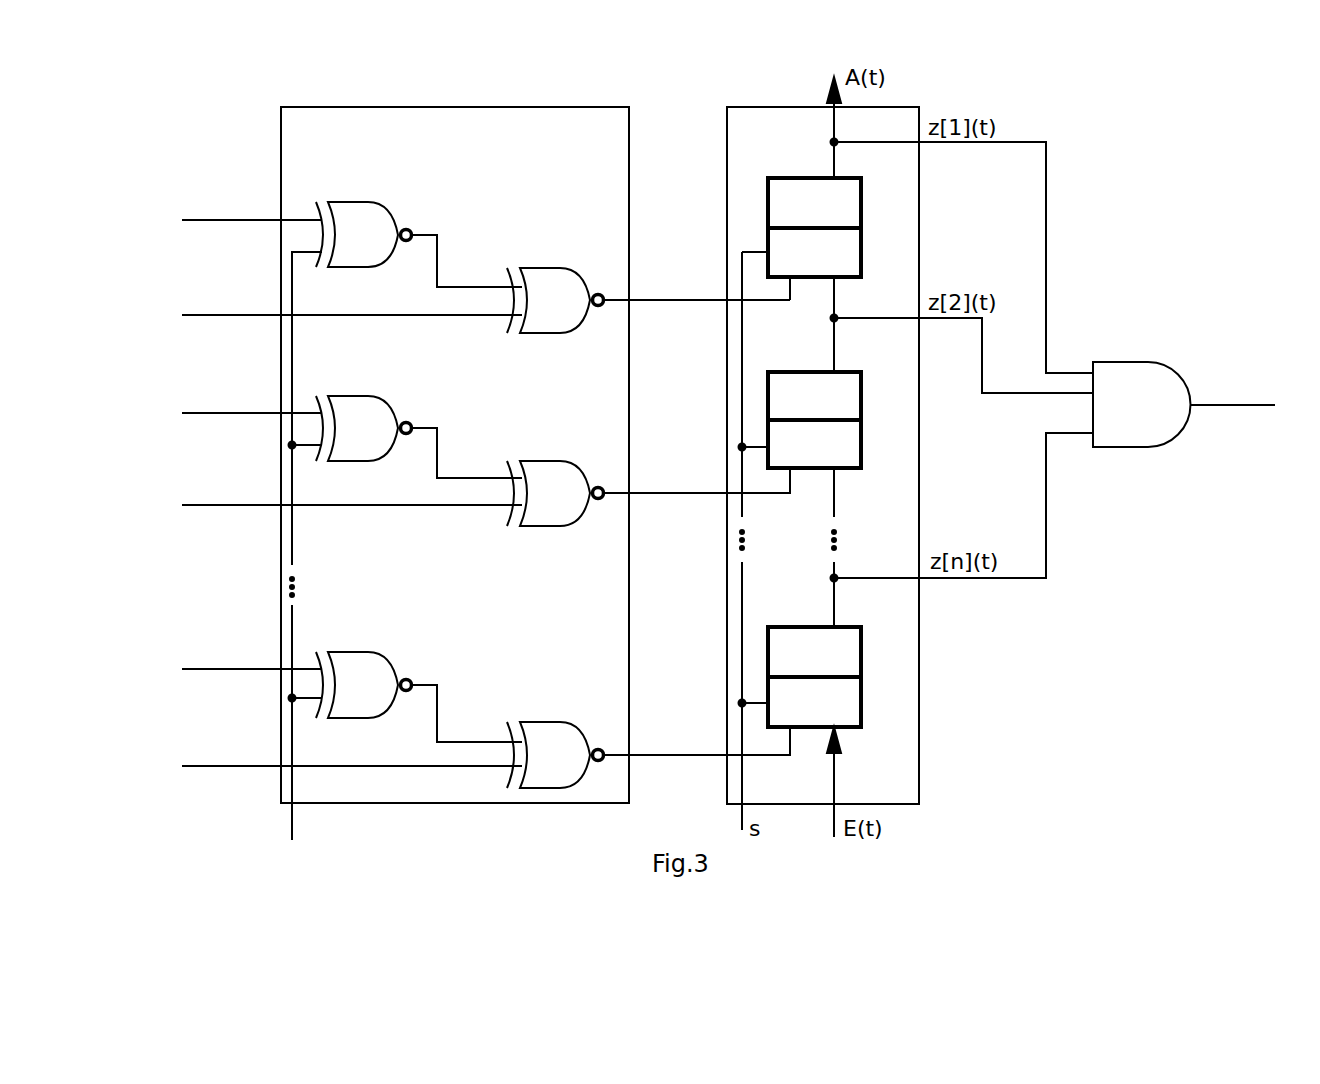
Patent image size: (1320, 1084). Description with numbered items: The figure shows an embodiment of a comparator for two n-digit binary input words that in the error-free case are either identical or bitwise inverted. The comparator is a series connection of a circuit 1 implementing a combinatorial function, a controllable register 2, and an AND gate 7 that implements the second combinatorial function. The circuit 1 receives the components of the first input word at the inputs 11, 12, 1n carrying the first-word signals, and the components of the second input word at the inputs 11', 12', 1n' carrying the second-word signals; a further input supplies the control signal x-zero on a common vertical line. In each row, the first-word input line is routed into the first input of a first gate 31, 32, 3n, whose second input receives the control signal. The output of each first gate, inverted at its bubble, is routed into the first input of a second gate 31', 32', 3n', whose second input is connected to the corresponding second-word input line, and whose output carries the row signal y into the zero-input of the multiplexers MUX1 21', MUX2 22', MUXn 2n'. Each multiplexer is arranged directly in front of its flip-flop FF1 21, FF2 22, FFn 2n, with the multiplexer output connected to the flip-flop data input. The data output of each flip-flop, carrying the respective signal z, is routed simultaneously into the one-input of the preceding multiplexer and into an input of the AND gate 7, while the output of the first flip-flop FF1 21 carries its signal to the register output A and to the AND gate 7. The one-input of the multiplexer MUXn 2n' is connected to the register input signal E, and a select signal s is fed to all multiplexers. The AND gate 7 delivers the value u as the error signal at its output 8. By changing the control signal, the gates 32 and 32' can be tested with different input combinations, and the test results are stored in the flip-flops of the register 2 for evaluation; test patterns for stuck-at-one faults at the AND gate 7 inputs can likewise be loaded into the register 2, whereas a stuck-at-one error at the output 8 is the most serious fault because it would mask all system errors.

The circuit for implementing combinatorial function f1 1 is at (603, 122).
The controllable register 2 is at (763, 122).
The input 11 is at (241, 185).
The input 11' is at (341, 281).
The input 12 is at (242, 382).
The input 12' is at (342, 473).
The input 1n is at (241, 635).
The input 1n' is at (341, 733).
The XOR gate 31 is at (419, 219).
The XNOR gate 31' is at (648, 274).
The XOR gate 32 is at (419, 413).
The XOR gate 32' is at (648, 471).
The XOR gate 3n is at (419, 669).
The XOR gate 3n' is at (648, 732).
The flip-flop FF1 21 is at (832, 192).
The multiplexer MUX1 21' is at (822, 239).
The flip-flop FF2 22 is at (832, 381).
The multiplexer MUX2 22' is at (821, 428).
The flip-flop FFn 2n is at (832, 639).
The multiplexer MUXn 2n' is at (821, 686).
The AND gate 7 is at (1145, 378).
The output 8 is at (1255, 402).